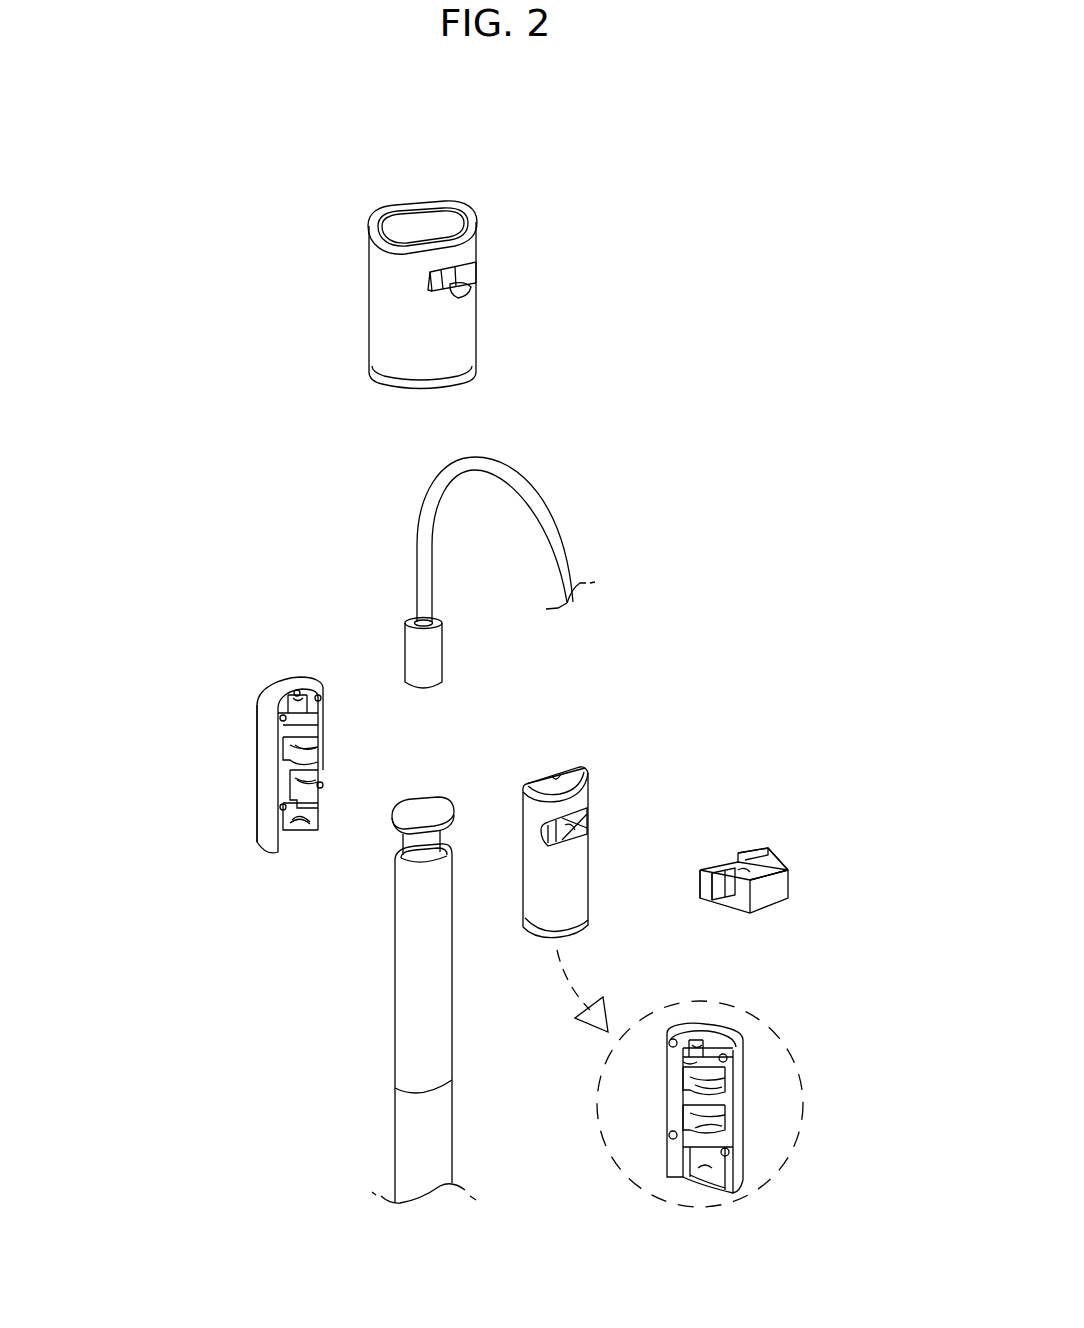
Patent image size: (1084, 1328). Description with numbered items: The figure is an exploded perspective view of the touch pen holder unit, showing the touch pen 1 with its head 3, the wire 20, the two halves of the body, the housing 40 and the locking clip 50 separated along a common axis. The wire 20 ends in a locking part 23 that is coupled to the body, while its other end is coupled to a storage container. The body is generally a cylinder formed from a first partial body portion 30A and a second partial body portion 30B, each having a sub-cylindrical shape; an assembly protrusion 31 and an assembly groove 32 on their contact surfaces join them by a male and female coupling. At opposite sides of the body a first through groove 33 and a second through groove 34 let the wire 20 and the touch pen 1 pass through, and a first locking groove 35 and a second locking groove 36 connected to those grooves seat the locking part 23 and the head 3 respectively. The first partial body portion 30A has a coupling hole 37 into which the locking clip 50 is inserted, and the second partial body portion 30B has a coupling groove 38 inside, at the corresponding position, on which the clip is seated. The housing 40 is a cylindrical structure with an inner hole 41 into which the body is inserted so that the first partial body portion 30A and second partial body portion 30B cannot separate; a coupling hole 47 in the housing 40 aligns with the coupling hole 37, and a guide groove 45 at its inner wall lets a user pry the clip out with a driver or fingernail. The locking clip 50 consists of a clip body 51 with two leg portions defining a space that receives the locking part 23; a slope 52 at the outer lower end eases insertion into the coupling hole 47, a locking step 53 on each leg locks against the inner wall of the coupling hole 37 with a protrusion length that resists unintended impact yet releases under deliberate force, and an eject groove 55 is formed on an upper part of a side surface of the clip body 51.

The touch pen 1 is at (400, 1016).
The head 3 is at (430, 808).
The wire 20 is at (533, 479).
The locking part 23 is at (407, 650).
The first partial body portion 30A is at (571, 877).
The second partial body portion 30B is at (266, 770).
The assembly protrusion 31 is at (281, 725).
The assembly groove 32 is at (728, 1058).
The first through groove 33 is at (298, 692).
The second through groove 34 is at (298, 820).
The first locking groove 35 is at (310, 712).
The second locking groove 36 is at (312, 777).
The coupling hole 37 is at (590, 838).
The coupling groove 38 is at (312, 737).
The housing 40 is at (385, 312).
The inner hole 41 is at (418, 226).
The guide groove 45 is at (470, 293).
The coupling hole 47 is at (470, 270).
The locking clip 50 is at (775, 845).
The clip body 51 is at (780, 865).
The slope 52 is at (700, 868).
The locking step 53 is at (715, 897).
The eject groove 55 is at (785, 880).